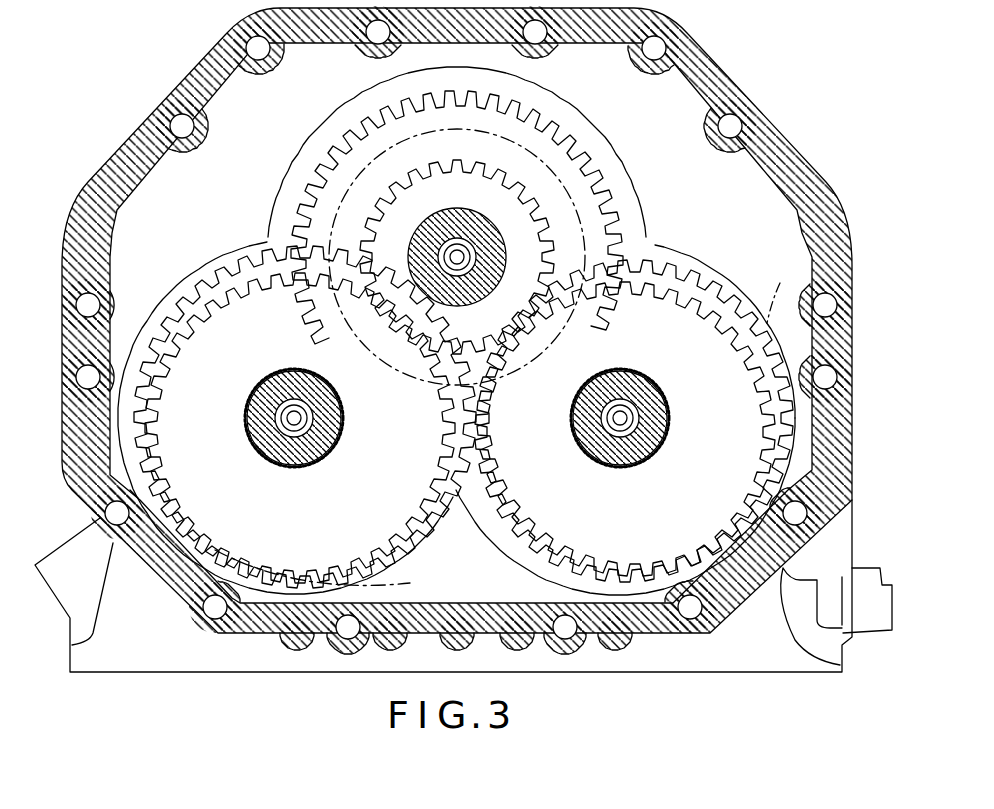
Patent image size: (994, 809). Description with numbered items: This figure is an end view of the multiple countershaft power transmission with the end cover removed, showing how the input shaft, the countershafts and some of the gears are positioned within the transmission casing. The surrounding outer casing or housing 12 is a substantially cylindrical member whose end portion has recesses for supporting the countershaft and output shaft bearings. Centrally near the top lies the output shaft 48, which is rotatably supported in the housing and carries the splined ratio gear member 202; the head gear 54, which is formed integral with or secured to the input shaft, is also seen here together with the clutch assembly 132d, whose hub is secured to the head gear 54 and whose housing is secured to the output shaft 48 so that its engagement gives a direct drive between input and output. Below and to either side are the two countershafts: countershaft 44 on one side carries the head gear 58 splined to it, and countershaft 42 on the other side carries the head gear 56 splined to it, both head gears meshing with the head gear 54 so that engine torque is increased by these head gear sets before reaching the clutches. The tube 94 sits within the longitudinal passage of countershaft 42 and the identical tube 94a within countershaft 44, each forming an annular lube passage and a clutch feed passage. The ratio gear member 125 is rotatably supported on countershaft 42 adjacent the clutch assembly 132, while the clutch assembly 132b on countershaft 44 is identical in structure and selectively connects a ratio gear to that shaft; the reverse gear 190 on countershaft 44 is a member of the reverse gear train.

The outer casing or housing 12 is at (690, 72).
The countershaft 42 is at (626, 362).
The countershaft 44 is at (275, 365).
The output shaft 48 is at (445, 310).
The head gear 54 is at (525, 238).
The head gear 56 is at (652, 312).
The head gear 58 is at (222, 268).
The tube 94 is at (668, 422).
The tube 94a is at (336, 452).
The ratio gear member 125 is at (718, 264).
The clutch assembly 132 is at (777, 288).
The clutch assembly 132b is at (410, 582).
The clutch assembly 132d is at (365, 160).
The reverse gear 190 is at (240, 250).
The ratio gear member 202 is at (525, 125).